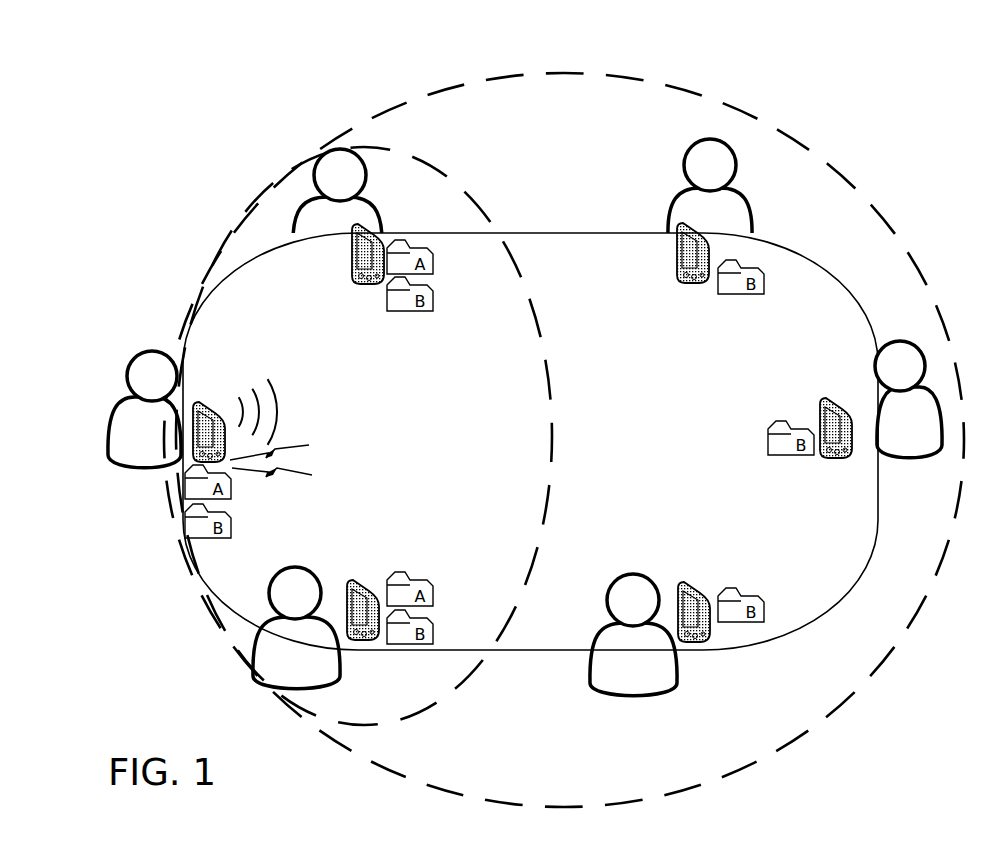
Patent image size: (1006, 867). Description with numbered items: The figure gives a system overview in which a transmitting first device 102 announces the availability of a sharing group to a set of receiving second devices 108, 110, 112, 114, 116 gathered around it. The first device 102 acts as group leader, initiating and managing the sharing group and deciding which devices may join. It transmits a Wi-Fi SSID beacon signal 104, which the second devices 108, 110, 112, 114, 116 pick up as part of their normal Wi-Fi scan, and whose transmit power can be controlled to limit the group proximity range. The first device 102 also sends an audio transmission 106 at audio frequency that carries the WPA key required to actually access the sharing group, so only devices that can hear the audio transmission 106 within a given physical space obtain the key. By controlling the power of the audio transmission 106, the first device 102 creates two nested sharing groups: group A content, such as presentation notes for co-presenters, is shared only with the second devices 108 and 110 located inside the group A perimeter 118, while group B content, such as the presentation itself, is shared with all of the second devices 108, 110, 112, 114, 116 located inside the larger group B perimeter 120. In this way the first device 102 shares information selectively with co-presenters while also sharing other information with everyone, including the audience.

The first device 102 is at (206, 406).
The Wi-Fi SSID beacon signal 104 is at (266, 476).
The audio transmission 106 is at (270, 381).
The second device 108 is at (369, 283).
The second device 110 is at (354, 585).
The second device 112 is at (686, 283).
The second device 114 is at (826, 400).
The second device 116 is at (685, 588).
The group A perimeter 118 is at (447, 175).
The group B perimeter 120 is at (619, 78).